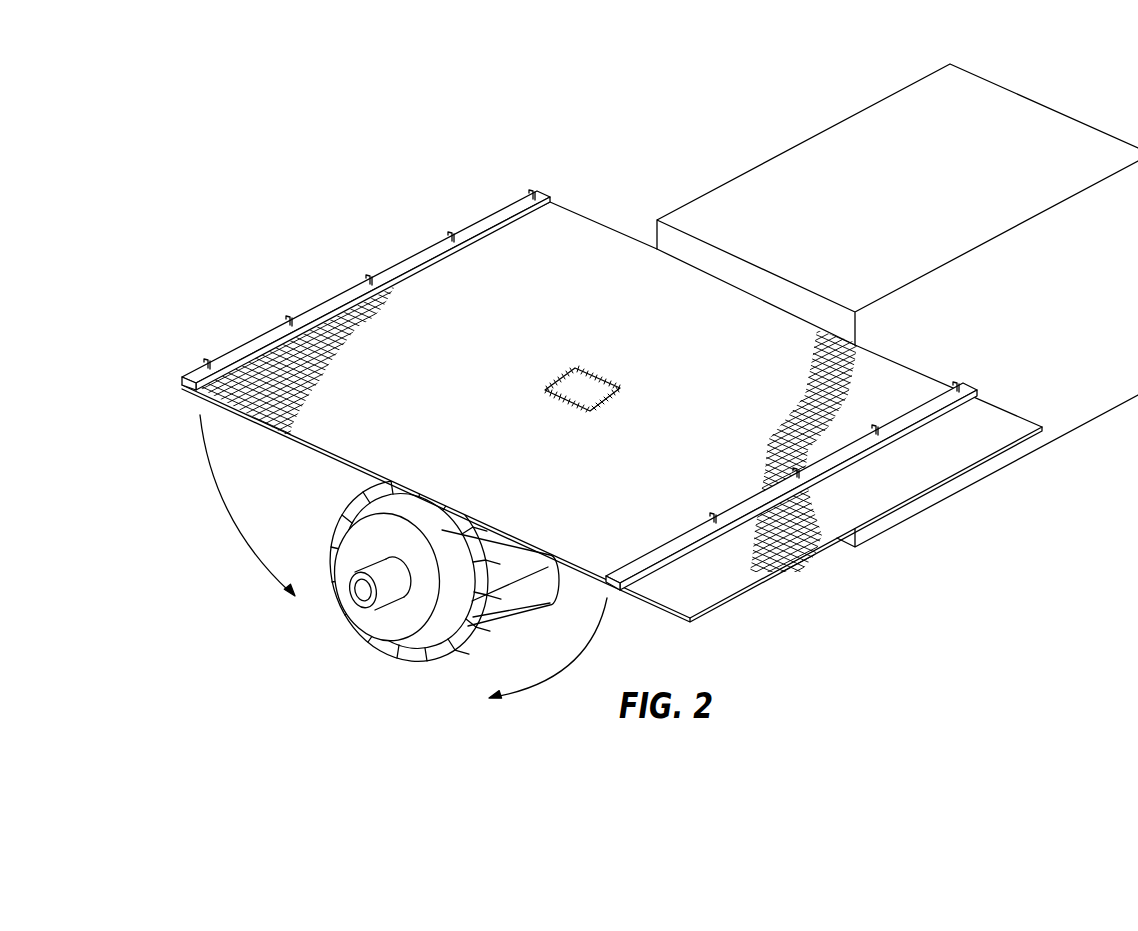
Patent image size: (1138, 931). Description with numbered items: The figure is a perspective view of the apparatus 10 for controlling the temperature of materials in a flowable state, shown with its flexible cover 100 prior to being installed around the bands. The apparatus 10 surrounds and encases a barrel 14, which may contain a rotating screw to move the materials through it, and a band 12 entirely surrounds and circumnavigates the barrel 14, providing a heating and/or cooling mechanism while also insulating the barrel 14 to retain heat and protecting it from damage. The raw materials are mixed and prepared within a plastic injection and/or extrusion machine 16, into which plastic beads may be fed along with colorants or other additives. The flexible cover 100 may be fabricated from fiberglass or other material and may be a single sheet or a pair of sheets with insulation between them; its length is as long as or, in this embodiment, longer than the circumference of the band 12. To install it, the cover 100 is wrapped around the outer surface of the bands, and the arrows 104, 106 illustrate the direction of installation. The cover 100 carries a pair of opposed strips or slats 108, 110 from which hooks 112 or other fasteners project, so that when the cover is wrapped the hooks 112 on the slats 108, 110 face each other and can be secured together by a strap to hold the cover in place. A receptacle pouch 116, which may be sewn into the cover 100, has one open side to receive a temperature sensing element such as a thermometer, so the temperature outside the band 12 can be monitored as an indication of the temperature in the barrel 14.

The apparatus 10 is at (303, 178).
The band 12 is at (336, 644).
The barrel 14 is at (397, 607).
The plastic injection and/or extrusion machine 16 is at (1029, 317).
The flexible cover 100 is at (690, 590).
The arrow 104 is at (243, 530).
The second direction 106 is at (560, 672).
The strip or slat 108 is at (472, 228).
The strip or slat 110 is at (668, 548).
The hooks 112 is at (287, 322).
The receptacle pouch 116 is at (584, 380).